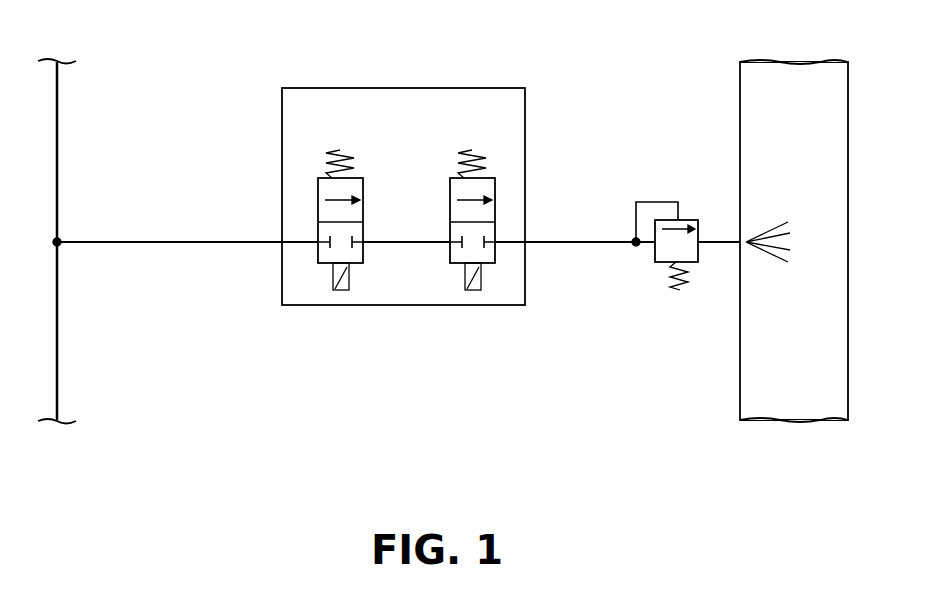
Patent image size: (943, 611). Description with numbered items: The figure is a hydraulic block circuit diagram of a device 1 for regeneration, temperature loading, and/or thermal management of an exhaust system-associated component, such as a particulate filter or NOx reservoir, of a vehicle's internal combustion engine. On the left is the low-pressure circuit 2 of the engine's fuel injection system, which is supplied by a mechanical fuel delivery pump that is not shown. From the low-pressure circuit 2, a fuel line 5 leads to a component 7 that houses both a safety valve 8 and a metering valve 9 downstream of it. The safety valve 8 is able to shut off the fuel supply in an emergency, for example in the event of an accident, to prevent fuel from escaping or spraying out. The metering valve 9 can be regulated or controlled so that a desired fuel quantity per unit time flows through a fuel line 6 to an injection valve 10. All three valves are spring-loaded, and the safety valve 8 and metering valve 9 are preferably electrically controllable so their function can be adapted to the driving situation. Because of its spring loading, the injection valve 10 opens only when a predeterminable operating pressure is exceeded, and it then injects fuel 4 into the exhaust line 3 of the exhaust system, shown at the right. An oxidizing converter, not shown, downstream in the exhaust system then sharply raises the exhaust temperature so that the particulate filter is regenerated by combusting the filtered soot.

The device 1 is at (163, 78).
The low-pressure circuit 2 is at (60, 345).
The exhaust line 3 is at (740, 344).
The fuel 4 is at (767, 225).
The fuel line 5 is at (140, 242).
The fuel line 6 is at (592, 242).
The component 7 is at (290, 121).
The safety valve 8 is at (318, 232).
The metering valve 9 is at (495, 230).
The injection valve 10 is at (690, 218).